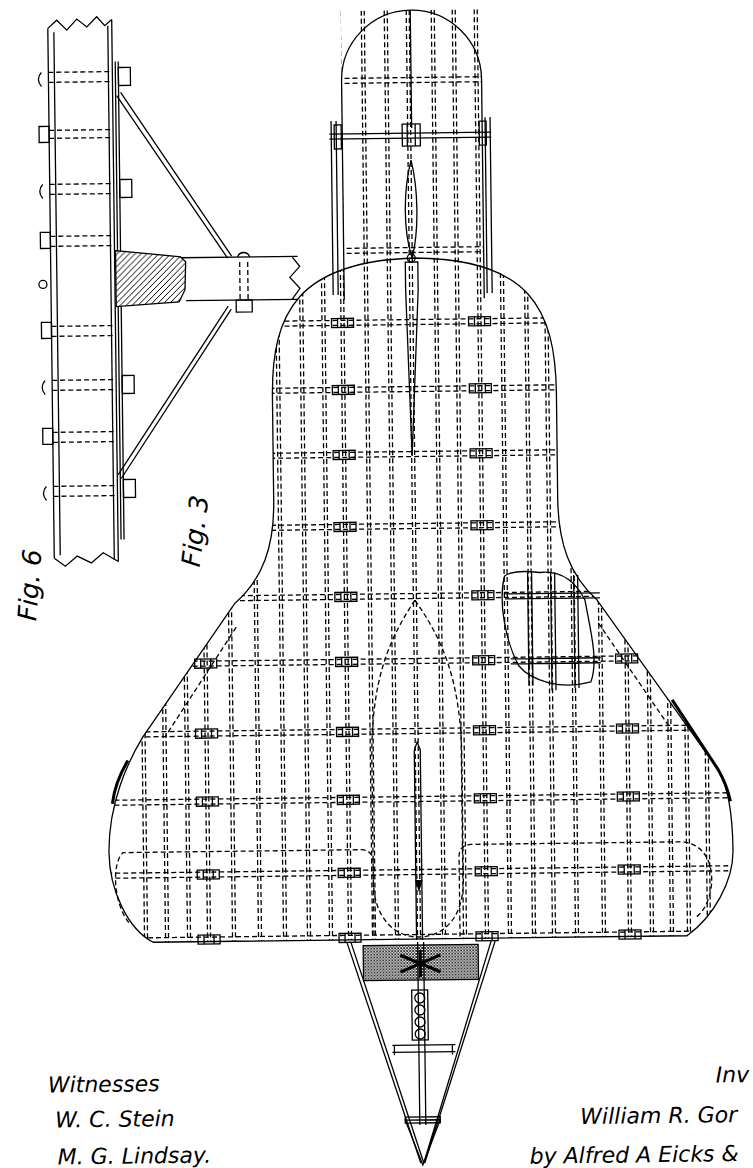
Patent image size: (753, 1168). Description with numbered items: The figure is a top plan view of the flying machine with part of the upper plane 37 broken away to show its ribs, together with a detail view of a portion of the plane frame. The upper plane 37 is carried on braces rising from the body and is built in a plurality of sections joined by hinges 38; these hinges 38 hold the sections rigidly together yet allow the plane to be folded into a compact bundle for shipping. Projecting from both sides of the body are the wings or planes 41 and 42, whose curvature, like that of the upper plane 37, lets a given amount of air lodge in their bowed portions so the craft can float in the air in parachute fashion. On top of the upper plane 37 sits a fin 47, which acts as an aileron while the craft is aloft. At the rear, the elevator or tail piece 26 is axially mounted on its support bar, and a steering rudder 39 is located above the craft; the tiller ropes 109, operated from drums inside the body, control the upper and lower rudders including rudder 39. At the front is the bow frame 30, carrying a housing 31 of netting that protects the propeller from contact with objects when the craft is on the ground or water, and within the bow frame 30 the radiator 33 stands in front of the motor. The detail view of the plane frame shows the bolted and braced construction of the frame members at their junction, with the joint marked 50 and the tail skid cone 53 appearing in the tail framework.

In FIG. 3, the elevator or tail piece 26 is at (353, 72).
In FIG. 3, the tiller ropes 109 is at (340, 195).
In FIG. 3, the steering rudder 39 is at (411, 212).
In FIG. 3, the upper plane 37 is at (402, 560).
In FIG. 3, the hinges 38 is at (348, 734).
In FIG. 3, the side wing or plane 42 is at (128, 760).
In FIG. 3, the side wing or plane 41 is at (120, 866).
In FIG. 3, the fin 47 is at (414, 830).
In FIG. 3, the bow frame 30 is at (377, 1040).
In FIG. 3, the housing 31 is at (392, 980).
In FIG. 3, the radiator 33 is at (434, 1000).
In FIG. 3, the tail skid cone 53 is at (434, 1050).
In FIG. 6, the beam joint 50 is at (50, 284).